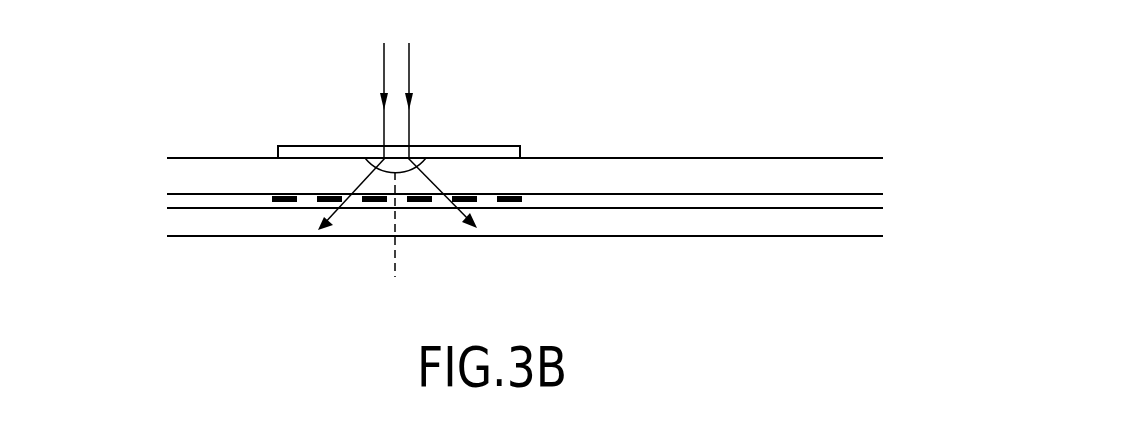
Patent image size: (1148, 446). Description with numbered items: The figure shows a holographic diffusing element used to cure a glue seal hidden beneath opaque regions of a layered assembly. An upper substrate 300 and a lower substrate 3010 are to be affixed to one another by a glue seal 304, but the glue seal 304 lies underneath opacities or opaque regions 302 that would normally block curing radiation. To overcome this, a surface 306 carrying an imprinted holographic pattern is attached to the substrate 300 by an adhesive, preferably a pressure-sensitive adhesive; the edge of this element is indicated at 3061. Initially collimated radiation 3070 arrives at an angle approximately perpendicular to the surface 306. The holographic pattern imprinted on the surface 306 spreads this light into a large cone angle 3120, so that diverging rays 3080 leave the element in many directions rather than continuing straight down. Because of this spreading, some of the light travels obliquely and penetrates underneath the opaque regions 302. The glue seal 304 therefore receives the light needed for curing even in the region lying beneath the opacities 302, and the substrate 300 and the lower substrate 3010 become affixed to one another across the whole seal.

The substrate 300 is at (866, 171).
The opaque regions 302 is at (277, 200).
The glue seal 304 is at (677, 210).
The holographic diffusing element 306 is at (493, 145).
The lower substrate 3010 is at (783, 237).
The edge of object 3061 is at (275, 157).
The collimated radiation 3070 is at (423, 100).
The scattered light 3080 is at (333, 215).
The cone angle 3120 is at (397, 250).